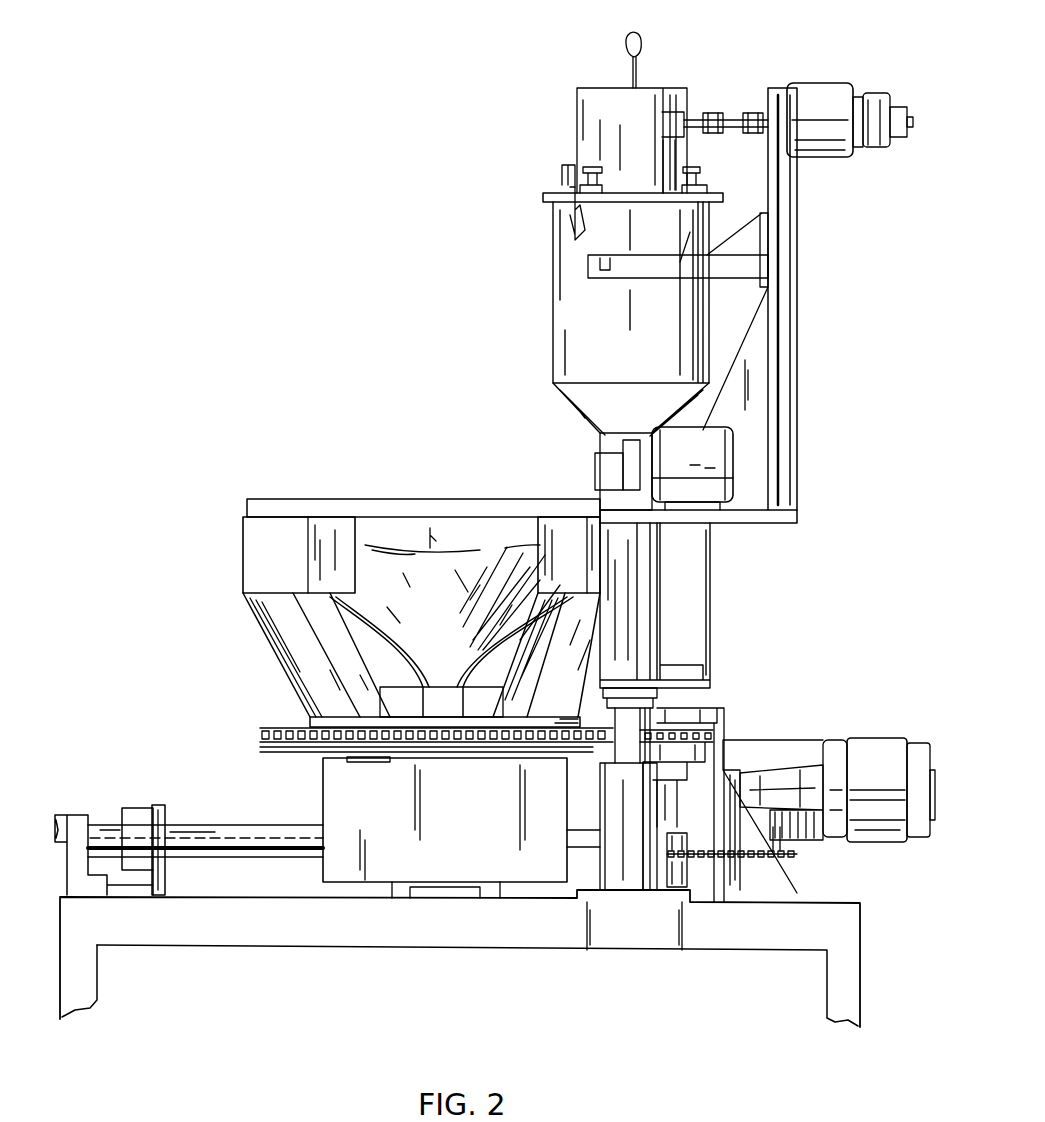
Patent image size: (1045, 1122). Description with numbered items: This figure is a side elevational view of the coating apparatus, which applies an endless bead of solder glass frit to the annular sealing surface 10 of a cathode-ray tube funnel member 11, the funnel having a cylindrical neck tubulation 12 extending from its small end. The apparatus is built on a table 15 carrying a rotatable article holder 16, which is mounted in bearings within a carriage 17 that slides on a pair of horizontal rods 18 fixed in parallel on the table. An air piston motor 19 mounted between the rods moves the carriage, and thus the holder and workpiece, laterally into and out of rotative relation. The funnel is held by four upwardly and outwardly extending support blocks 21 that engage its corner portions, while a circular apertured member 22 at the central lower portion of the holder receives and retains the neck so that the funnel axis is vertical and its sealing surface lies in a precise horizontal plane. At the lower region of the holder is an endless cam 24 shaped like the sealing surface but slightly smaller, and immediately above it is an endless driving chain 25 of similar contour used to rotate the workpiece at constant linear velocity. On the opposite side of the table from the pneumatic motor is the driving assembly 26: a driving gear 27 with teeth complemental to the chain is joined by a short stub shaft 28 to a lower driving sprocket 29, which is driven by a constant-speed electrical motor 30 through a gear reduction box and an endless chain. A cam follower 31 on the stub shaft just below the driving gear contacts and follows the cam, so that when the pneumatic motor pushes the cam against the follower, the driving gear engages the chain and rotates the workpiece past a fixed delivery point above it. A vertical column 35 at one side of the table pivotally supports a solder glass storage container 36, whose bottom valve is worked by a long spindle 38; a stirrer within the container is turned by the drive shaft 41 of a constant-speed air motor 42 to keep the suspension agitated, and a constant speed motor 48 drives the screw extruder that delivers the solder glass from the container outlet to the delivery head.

The annular sealing surface 10 is at (427, 520).
The cathode-ray tube funnel member 11 is at (457, 634).
The cylindrical neck tubulation 12 is at (443, 667).
The table 15 is at (280, 940).
The rotatable article holder 16 is at (283, 637).
The carriage 17 is at (392, 819).
The horizontal rods 18 is at (215, 825).
The air piston motor 19 is at (108, 813).
The support blocks 21 is at (283, 540).
The circular apertured member 22 is at (472, 700).
The endless cam 24 is at (288, 748).
The endless driving chain 25 is at (262, 730).
The driving assembly 26 is at (832, 739).
The driving gear 27 is at (687, 742).
The stub shaft 28 is at (667, 798).
The lower driving sprocket 29 is at (700, 853).
The constant-speed electrical motor 30 is at (873, 753).
The cam follower 31 is at (680, 748).
The vertical column 35 is at (623, 738).
The solder glass storage container 36 is at (562, 295).
The spindle 38 is at (633, 78).
The drive shaft 41 is at (720, 123).
The constant-speed air motor 42 is at (817, 97).
The constant speed motor 48 is at (727, 472).